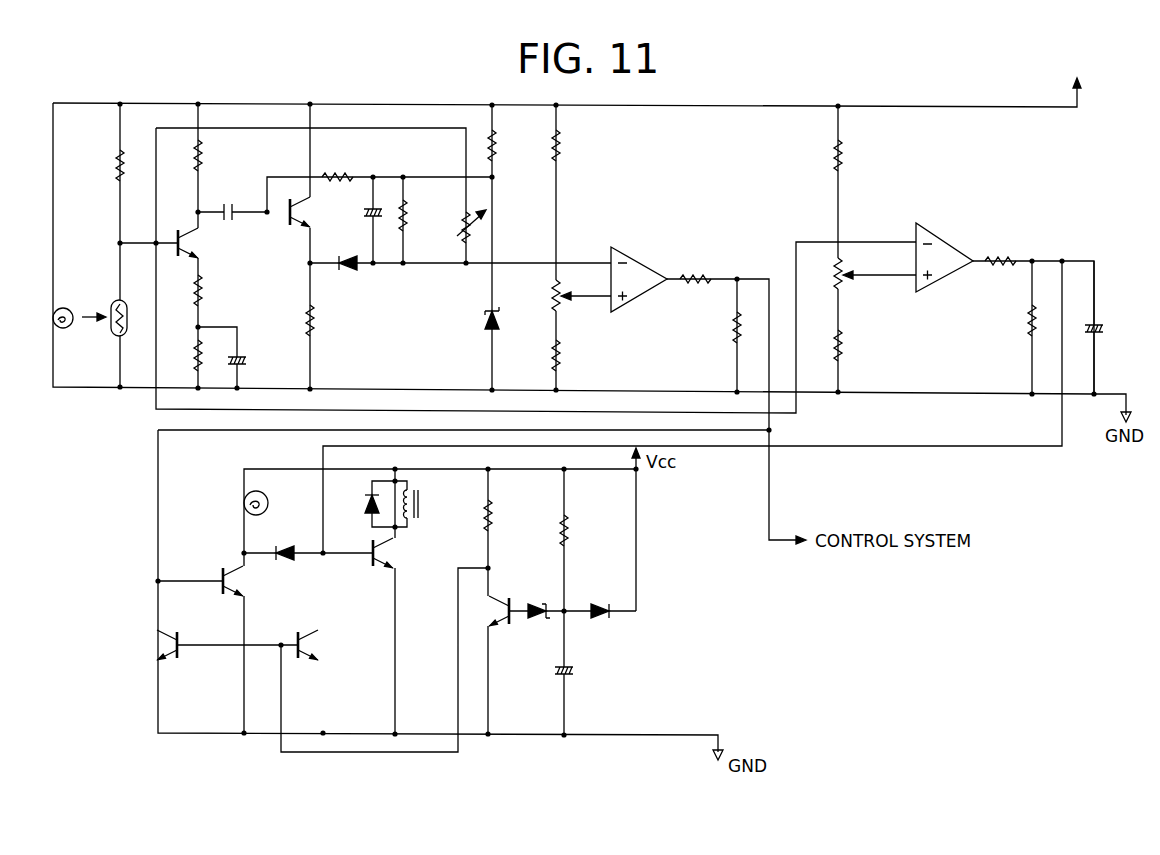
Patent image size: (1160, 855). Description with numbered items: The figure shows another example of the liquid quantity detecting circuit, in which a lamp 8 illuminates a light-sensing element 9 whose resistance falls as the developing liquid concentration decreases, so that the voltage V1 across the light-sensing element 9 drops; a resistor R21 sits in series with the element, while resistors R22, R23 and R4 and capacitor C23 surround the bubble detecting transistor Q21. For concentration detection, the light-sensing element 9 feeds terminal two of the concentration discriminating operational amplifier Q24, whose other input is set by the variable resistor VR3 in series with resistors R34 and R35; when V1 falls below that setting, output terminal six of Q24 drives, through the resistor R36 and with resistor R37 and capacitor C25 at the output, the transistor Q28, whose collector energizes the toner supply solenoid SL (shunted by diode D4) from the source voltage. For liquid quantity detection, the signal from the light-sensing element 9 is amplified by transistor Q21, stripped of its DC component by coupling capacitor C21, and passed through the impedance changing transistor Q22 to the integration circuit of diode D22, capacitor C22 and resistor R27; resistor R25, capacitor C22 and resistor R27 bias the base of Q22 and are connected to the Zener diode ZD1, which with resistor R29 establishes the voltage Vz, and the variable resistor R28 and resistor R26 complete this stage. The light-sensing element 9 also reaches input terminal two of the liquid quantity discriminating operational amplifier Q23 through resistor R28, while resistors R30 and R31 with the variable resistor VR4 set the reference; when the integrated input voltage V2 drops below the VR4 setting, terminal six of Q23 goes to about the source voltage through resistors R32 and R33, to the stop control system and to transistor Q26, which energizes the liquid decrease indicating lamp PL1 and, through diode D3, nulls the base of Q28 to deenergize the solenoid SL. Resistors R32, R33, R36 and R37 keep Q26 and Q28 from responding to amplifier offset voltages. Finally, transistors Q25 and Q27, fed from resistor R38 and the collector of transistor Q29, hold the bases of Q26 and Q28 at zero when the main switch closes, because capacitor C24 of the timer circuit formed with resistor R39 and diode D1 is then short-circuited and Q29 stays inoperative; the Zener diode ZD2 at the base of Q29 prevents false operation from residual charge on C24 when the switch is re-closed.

The lamp 8 is at (66, 308).
The light-sensing element 9 is at (126, 310).
The resistor R21 is at (103, 173).
The resistor R22 is at (216, 158).
The resistor R23 is at (216, 297).
The resistor R4 is at (186, 357).
The resistor R25 is at (341, 166).
The resistor R26 is at (328, 325).
The resistor R27 is at (421, 220).
The resistor R28 is at (453, 226).
The resistor R29 is at (510, 141).
The resistor R30 is at (575, 192).
The resistor R31 is at (574, 350).
The resistor R32 is at (701, 269).
The resistor R33 is at (718, 335).
The resistor R34 is at (856, 182).
The resistor R35 is at (856, 340).
The resistor R36 is at (1004, 250).
The resistor R37 is at (1013, 327).
The resistor R38 is at (507, 518).
The resistor R39 is at (583, 540).
The variable resistor VR3 is at (875, 281).
The variable resistor VR4 is at (538, 308).
The coupling capacitor C21 is at (232, 224).
The capacitor C22 is at (363, 220).
The capacitor C23 is at (241, 357).
The capacitor C24 is at (584, 673).
The capacitor C25 is at (1111, 327).
The bubble detecting transistor Q21 is at (194, 255).
The transistor Q22 is at (311, 216).
The liquid quantity discriminating operational amplifier Q23 is at (636, 252).
The concentration discriminating operational amplifier Q24 is at (940, 232).
The transistor Q25 is at (160, 647).
The transistor Q26 is at (243, 594).
The transistor Q27 is at (325, 640).
The transistor Q28 is at (393, 547).
The transistor Q29 is at (494, 596).
The diode D1 is at (602, 623).
The diode D3 is at (290, 566).
The diode D4 is at (366, 498).
The diode D22 is at (368, 274).
The Zener diode ZD1 is at (472, 283).
The Zener diode ZD2 is at (537, 623).
The lamp PL1 is at (273, 499).
The toner supply solenoid SL is at (420, 504).
The voltage across the light-sensing element V1 is at (86, 241).
The input voltage of the operational amplifier V2 is at (609, 262).
The zener voltage Vz is at (497, 180).